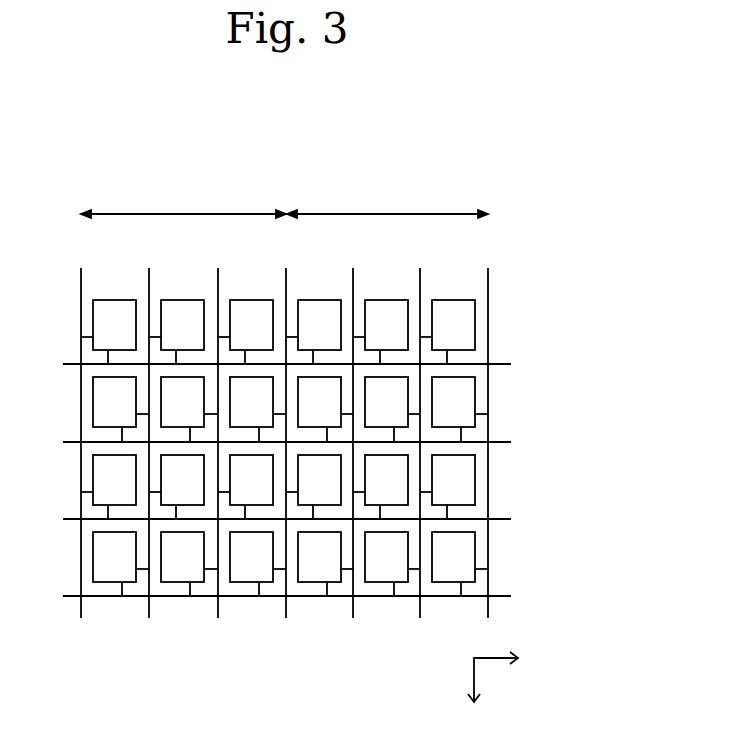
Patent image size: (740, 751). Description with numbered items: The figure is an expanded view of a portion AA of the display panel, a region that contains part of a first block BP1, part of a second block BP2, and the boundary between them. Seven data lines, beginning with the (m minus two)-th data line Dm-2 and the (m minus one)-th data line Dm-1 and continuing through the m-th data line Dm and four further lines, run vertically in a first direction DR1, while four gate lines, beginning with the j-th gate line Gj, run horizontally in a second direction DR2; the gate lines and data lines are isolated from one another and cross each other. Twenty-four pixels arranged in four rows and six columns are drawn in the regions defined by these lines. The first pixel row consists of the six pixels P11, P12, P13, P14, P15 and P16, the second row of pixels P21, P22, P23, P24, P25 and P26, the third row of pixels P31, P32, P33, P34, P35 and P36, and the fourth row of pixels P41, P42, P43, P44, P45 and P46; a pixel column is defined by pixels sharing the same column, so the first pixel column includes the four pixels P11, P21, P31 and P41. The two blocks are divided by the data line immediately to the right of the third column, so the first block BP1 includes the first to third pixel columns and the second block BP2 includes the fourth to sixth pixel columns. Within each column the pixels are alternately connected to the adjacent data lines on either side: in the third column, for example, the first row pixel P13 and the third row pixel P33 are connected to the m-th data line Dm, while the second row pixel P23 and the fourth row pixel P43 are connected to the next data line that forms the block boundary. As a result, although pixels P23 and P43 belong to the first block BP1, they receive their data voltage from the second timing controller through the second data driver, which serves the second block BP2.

The portion AA is at (550, 122).
The first block BP1 is at (183, 202).
The second block BP2 is at (387, 202).
The first direction DR1 is at (475, 709).
The second direction DR2 is at (515, 674).
The (m-2)-th data line Dm-2 is at (85, 431).
The (m-1)-th data line Dm-1 is at (153, 431).
The m-th data line Dm is at (222, 431).
The j-th gate line Gj is at (268, 364).
The pixel P11 is at (108, 332).
The pixel P12 is at (176, 332).
The pixel P13 is at (245, 332).
The pixel P14 is at (313, 332).
The pixel P15 is at (380, 332).
The pixel P16 is at (447, 332).
The pixel P21 is at (121, 409).
The pixel P22 is at (189, 409).
The pixel P23 is at (258, 409).
The pixel P24 is at (325, 409).
The pixel P25 is at (392, 409).
The pixel P26 is at (460, 409).
The pixel P31 is at (108, 487).
The pixel P32 is at (176, 487).
The pixel P33 is at (245, 487).
The pixel P34 is at (313, 487).
The pixel P35 is at (380, 487).
The pixel P36 is at (447, 487).
The pixel P41 is at (121, 564).
The pixel P42 is at (189, 564).
The pixel P43 is at (258, 564).
The pixel P44 is at (325, 564).
The pixel P45 is at (392, 564).
The pixel P46 is at (460, 564).